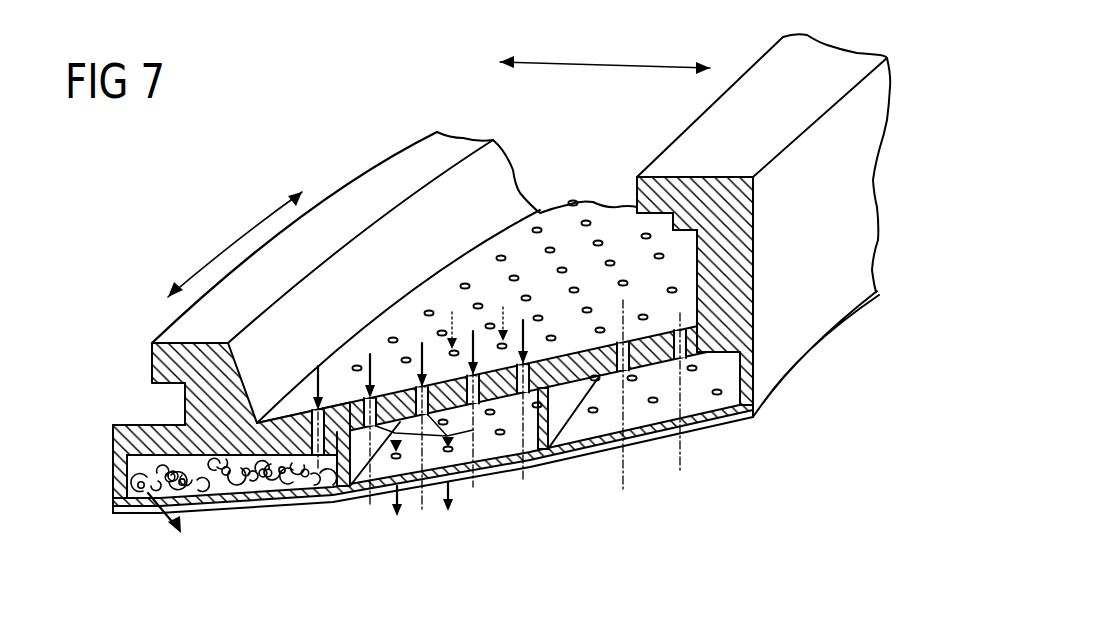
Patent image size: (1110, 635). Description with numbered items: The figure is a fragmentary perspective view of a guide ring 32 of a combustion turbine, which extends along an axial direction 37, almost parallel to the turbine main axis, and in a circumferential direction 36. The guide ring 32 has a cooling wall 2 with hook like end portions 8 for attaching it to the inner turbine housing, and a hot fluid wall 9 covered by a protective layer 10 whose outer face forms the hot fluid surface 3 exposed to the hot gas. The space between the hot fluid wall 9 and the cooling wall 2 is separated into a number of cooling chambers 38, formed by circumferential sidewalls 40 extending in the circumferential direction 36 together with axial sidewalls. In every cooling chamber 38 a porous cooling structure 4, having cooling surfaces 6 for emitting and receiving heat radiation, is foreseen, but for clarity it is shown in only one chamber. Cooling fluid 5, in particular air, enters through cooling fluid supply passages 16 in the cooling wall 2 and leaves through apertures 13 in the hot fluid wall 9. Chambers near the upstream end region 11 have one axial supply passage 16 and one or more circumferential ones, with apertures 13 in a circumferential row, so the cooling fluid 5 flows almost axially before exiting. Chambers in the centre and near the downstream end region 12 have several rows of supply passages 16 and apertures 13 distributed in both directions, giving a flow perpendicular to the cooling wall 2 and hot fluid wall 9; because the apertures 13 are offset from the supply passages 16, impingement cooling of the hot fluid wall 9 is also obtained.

The cooling wall 2 is at (277, 427).
The hot fluid surface 3 is at (815, 347).
The cooling structure 4 is at (288, 510).
The cooling fluid 5 is at (420, 340).
The cooling surfaces 6 is at (257, 497).
The hook like end portions 8 is at (703, 183).
The hot fluid wall 9 is at (355, 462).
The protective layer 10 is at (743, 427).
The upstream end region 11 is at (120, 442).
The downstream end region 12 is at (737, 337).
The aperture 13 is at (717, 393).
The cooling fluid supply passage 16 is at (722, 330).
The guide ring 32 is at (372, 183).
The circumferential direction 36 is at (230, 240).
The axial direction 37 is at (552, 62).
The cooling chambers 38 is at (197, 513).
The circumferential sidewalls 40 is at (545, 387).